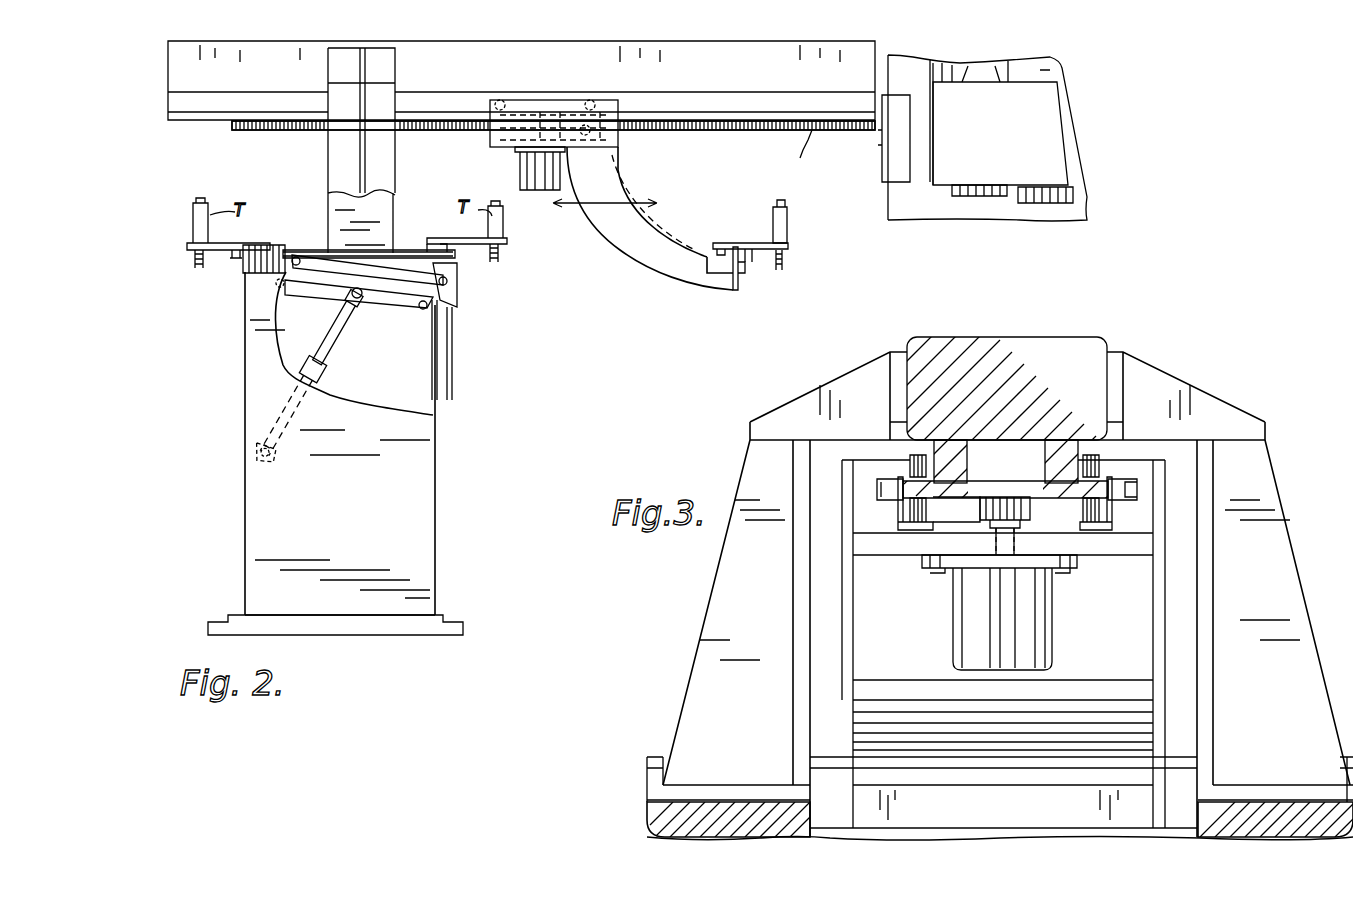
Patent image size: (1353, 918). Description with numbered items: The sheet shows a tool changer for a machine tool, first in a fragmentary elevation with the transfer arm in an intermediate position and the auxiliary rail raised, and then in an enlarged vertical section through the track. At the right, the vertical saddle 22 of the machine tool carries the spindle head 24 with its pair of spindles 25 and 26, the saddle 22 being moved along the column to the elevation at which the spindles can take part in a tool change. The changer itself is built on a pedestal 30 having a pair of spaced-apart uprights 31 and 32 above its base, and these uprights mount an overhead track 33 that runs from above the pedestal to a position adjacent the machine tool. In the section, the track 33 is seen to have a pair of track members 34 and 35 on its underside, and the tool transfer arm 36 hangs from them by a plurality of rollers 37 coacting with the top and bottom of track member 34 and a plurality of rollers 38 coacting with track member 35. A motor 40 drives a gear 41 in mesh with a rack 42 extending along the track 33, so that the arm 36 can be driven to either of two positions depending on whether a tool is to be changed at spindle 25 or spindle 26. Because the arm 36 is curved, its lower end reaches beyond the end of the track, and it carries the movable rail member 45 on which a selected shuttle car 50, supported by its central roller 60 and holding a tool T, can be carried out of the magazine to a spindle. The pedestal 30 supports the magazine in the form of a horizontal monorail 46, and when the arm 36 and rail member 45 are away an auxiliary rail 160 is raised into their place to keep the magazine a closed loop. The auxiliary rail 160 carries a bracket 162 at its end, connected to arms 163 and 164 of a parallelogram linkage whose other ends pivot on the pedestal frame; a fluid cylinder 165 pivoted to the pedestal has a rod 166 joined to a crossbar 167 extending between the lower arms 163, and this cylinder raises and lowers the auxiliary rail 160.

In FIG. 2, the vertical saddle 22 is at (888, 207).
In FIG. 2, the spindle head 24 is at (1000, 154).
In FIG. 2, the spindle 25 is at (975, 196).
In FIG. 2, the spindle 26 is at (1045, 203).
In FIG. 2, the pedestal 30 is at (447, 475).
In FIG. 3, the pedestal 30 is at (637, 817).
In FIG. 2, the upright 31 is at (380, 163).
In FIG. 3, the upright 31 is at (1272, 530).
In FIG. 2, the upright 32 is at (385, 203).
In FIG. 3, the upright 32 is at (720, 600).
In FIG. 3, the overhead track 33 is at (1048, 345).
In FIG. 3, the track member 34 is at (940, 525).
In FIG. 3, the track member 35 is at (1072, 502).
In FIG. 2, the tool transfer arm 36 is at (622, 248).
In FIG. 3, the tool transfer arm 36 is at (1100, 655).
In FIG. 3, the rollers 37 is at (880, 530).
In FIG. 2, the rollers 38 is at (500, 100).
In FIG. 3, the rollers 38 is at (1095, 465).
In FIG. 2, the motor 40 is at (540, 182).
In FIG. 3, the motor 40 is at (1033, 588).
In FIG. 2, the gear 41 is at (471, 172).
In FIG. 3, the gear 41 is at (1000, 497).
In FIG. 2, the rack 42 is at (803, 130).
In FIG. 3, the rack 42 is at (978, 495).
In FIG. 2, the movable rail member 45 is at (740, 275).
In FIG. 3, the movable rail member 45 is at (827, 748).
In FIG. 3, the horizontal monorail 46 is at (657, 757).
In FIG. 2, the shuttle car 50 is at (760, 243).
In FIG. 2, the central roller 60 is at (745, 265).
In FIG. 2, the auxiliary rail 160 is at (450, 262).
In FIG. 2, the bracket 162 is at (450, 292).
In FIG. 2, the lower parallelogram arm 163 is at (403, 302).
In FIG. 2, the parallelogram arm 164 is at (320, 257).
In FIG. 2, the fluid cylinder 165 is at (318, 380).
In FIG. 2, the rod 166 is at (335, 330).
In FIG. 2, the crossbar 167 is at (352, 296).